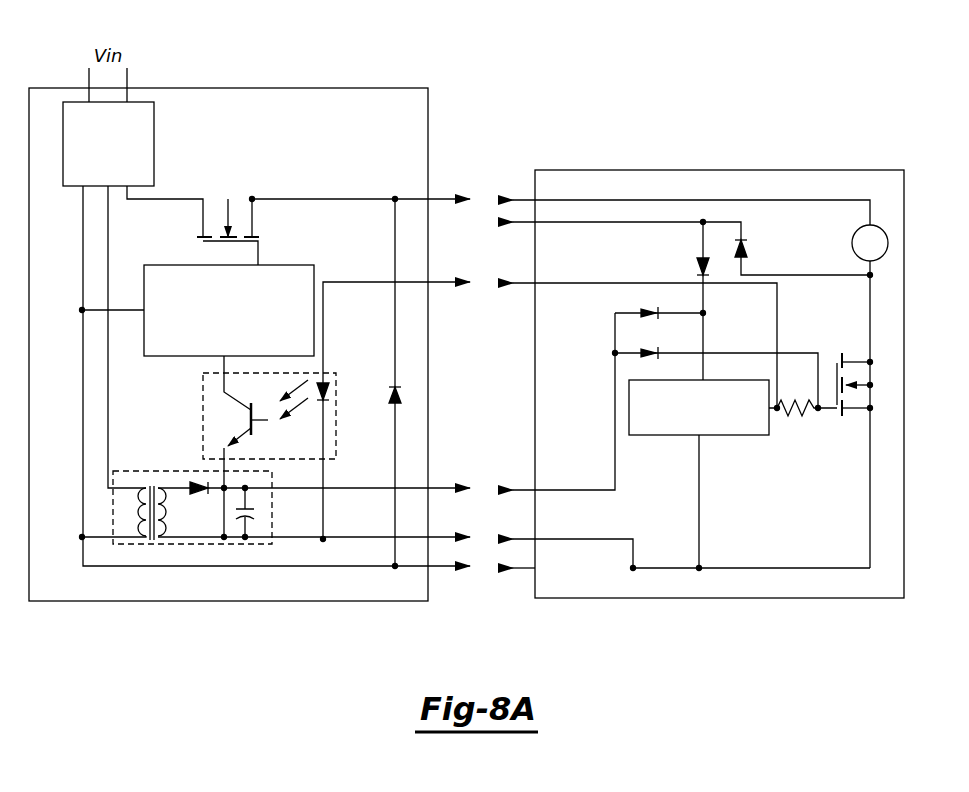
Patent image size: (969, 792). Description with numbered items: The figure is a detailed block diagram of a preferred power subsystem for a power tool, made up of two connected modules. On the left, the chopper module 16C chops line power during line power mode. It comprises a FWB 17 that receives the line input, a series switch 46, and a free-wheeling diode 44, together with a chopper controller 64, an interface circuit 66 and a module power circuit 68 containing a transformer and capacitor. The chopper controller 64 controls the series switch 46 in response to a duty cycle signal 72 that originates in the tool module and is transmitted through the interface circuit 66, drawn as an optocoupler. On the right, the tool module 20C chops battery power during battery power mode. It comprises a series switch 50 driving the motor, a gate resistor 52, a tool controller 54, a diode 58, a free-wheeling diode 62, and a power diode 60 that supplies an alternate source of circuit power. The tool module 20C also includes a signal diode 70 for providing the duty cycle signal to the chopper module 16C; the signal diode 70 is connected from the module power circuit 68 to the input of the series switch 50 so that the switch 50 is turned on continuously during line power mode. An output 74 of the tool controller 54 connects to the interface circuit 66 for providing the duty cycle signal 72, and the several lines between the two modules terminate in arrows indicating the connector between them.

The chopper module 16C is at (203, 88).
The FWB 17 is at (154, 175).
The series switch 46 is at (230, 199).
The chopper controller 64 is at (314, 272).
The duty cycle signal 72 is at (460, 281).
The interface circuit 66 is at (204, 423).
The module power circuit 68 is at (182, 471).
The free-wheeling diode 44 is at (389, 398).
The tool module 20C is at (743, 158).
The series switch 50 is at (869, 316).
The free-wheeling diode 62 is at (745, 240).
The power diode 60 is at (701, 272).
The diode 58 is at (657, 309).
The signal diode 70 is at (658, 352).
The tool controller 54 is at (688, 435).
The output 74 is at (785, 416).
The gate resistor 52 is at (796, 418).